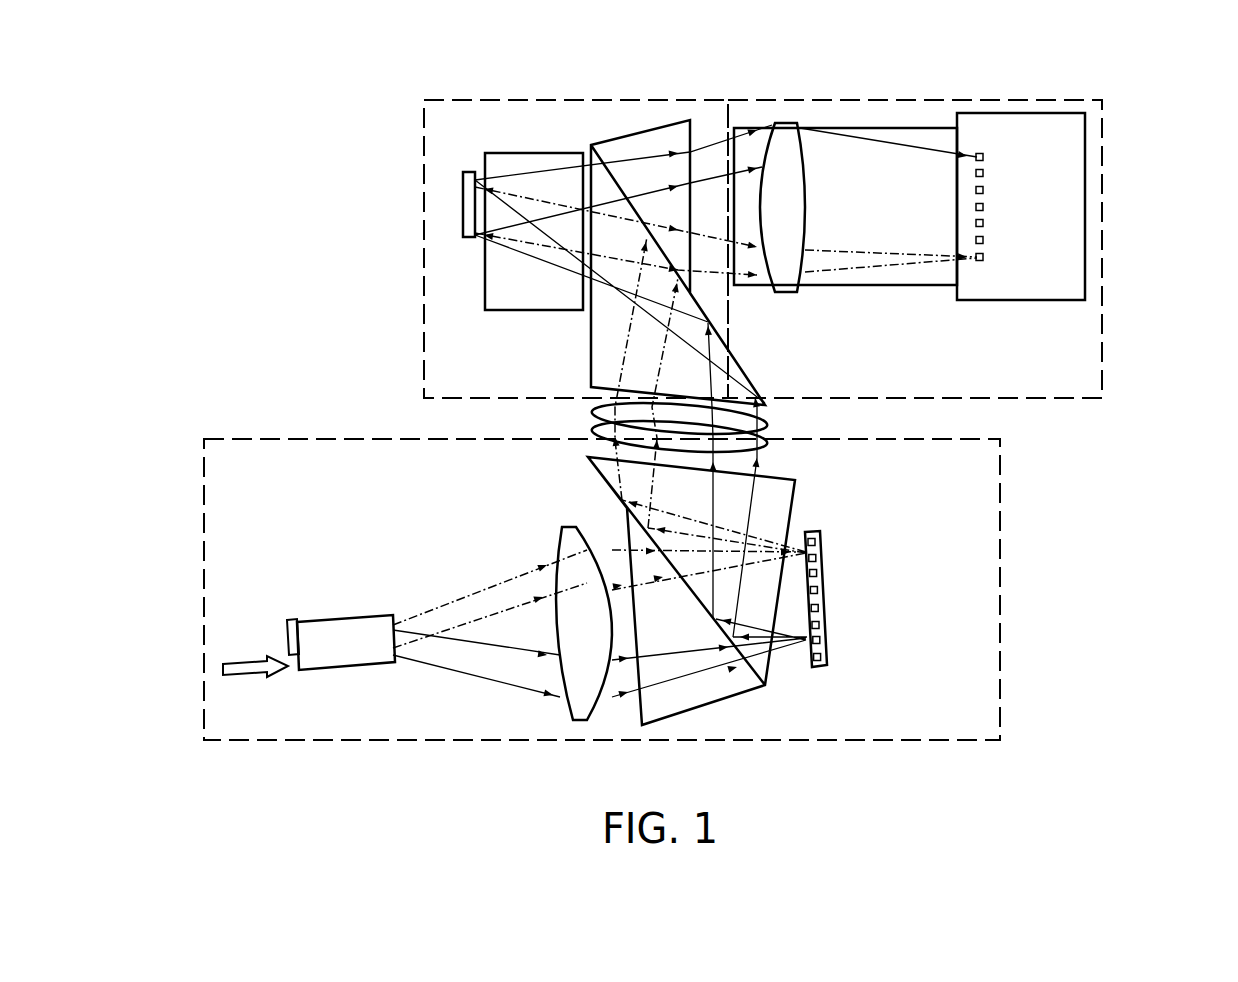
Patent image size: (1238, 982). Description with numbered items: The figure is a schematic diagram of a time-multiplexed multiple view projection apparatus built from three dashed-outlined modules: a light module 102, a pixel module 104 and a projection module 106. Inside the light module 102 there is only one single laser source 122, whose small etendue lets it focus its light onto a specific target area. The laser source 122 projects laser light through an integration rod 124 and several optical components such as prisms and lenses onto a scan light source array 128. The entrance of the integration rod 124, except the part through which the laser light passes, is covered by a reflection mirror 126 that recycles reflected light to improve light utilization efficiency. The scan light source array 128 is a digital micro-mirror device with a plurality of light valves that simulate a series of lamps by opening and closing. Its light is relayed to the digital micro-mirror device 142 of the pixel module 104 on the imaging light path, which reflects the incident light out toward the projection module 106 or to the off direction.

The light module 102 is at (965, 682).
The pixel module 104 is at (462, 360).
The projection module 106 is at (1067, 360).
The laser source 122 is at (252, 660).
The integration rod 124 is at (338, 618).
The reflection mirror 126 is at (287, 620).
The scan light source array 128 is at (823, 582).
The digital micro-mirror device 142 is at (462, 203).